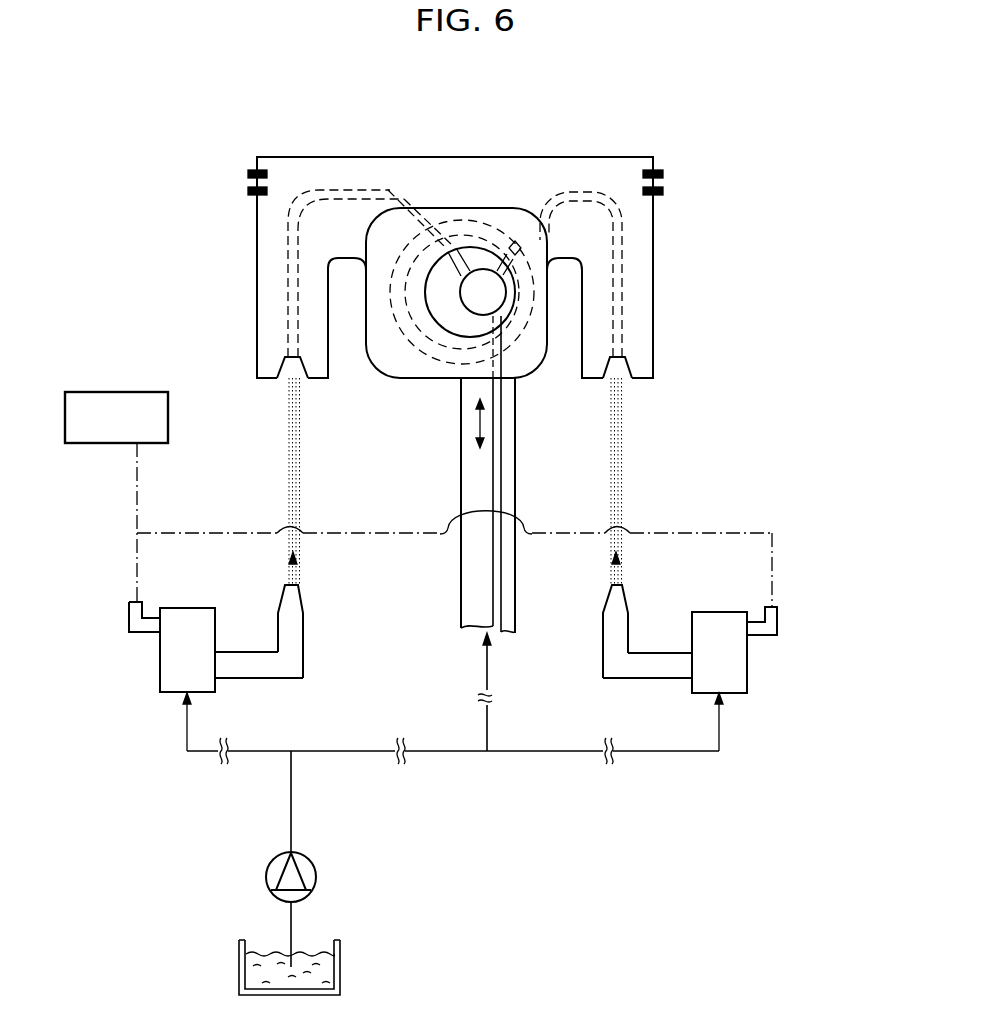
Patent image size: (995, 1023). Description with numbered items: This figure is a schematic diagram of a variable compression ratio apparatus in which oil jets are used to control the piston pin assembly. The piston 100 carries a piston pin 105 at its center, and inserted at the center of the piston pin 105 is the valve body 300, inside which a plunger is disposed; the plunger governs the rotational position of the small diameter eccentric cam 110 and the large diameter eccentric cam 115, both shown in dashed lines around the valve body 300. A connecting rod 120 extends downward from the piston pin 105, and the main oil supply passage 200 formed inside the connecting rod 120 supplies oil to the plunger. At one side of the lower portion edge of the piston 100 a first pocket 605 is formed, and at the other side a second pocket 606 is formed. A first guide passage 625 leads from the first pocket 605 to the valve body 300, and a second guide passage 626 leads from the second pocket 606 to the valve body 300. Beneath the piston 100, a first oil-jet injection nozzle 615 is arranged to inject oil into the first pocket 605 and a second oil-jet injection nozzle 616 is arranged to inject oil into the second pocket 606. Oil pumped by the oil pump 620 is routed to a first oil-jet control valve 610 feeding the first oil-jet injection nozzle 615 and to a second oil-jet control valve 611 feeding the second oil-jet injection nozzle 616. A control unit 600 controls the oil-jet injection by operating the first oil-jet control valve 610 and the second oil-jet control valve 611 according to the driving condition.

The piston 100 is at (316, 170).
The piston pin 105 is at (480, 247).
The small diameter eccentric cam 110 is at (459, 234).
The large diameter eccentric cam 115 is at (388, 200).
The connecting rod 120 is at (468, 477).
The main oil supply passage 200 is at (493, 600).
The valve body 300 is at (505, 292).
The control unit 600 is at (125, 392).
The first pocket 605 is at (281, 372).
The second pocket 606 is at (638, 378).
The first oil-jet control valve 610 is at (168, 678).
The second oil-jet control valve 611 is at (742, 676).
The first oil-jet injection nozzle 615 is at (295, 600).
The second oil-jet injection nozzle 616 is at (610, 607).
The oil pump 620 is at (265, 878).
The first guide passage 625 is at (288, 253).
The second guide passage 626 is at (622, 258).